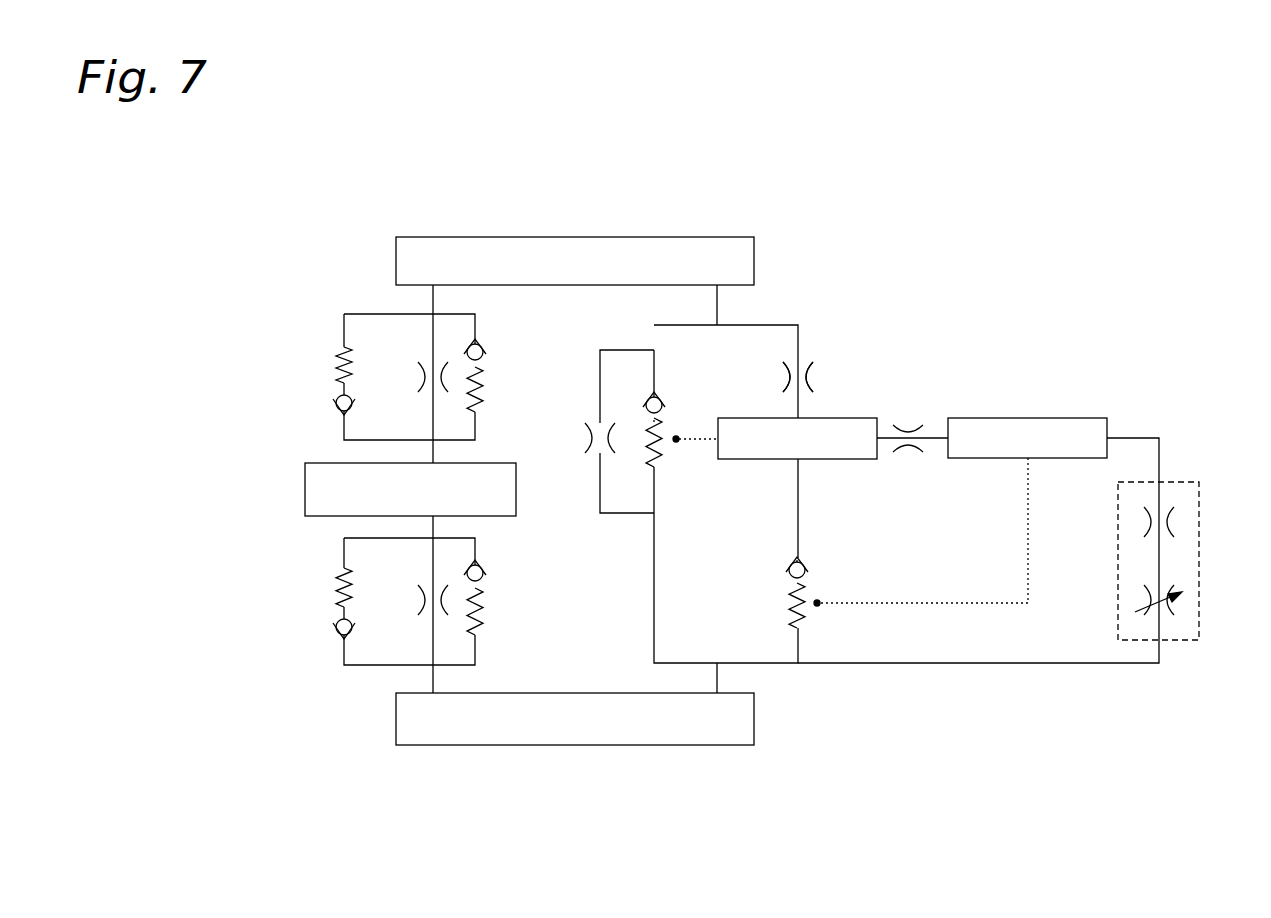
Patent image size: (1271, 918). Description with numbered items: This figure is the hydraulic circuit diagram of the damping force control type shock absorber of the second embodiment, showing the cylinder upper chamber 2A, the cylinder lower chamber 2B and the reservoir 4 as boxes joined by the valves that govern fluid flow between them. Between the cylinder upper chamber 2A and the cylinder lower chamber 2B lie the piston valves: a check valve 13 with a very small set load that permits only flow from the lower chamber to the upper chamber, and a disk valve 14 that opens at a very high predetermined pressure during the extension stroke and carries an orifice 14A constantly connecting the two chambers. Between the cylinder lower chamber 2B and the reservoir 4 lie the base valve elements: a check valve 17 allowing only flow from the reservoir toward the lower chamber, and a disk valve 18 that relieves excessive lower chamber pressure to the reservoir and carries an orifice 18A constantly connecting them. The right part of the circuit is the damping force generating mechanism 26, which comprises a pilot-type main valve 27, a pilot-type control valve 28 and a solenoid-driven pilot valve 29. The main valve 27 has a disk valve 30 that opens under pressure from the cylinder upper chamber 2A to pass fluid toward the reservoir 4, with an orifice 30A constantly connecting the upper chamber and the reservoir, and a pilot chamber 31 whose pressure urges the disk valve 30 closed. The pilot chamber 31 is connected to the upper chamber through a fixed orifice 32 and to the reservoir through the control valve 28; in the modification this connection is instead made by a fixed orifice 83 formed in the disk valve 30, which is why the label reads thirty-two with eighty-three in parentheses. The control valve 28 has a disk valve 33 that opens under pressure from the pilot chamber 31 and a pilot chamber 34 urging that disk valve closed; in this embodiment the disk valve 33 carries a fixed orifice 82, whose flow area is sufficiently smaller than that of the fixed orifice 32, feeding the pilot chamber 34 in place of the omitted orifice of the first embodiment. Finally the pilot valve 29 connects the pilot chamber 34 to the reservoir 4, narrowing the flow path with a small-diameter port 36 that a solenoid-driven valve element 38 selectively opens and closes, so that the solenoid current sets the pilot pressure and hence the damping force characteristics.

The cylinder upper chamber 2A is at (681, 237).
The cylinder lower chamber 2B is at (305, 485).
The reservoir 4 is at (658, 745).
The check valve 13 is at (336, 406).
The disk valve 14 is at (484, 351).
The orifice 14A is at (421, 377).
The check valve 17 is at (336, 629).
The disk valve 18 is at (484, 572).
The orifice 18A is at (421, 600).
The damping force generating mechanism 26 is at (1048, 322).
The main valve 27 is at (673, 473).
The control valve 28 is at (833, 583).
The pilot valve 29 is at (1203, 470).
The disk valve 30 is at (663, 403).
The orifice 30A is at (590, 438).
The pilot chamber 31 is at (855, 418).
The fixed orifice 32 is at (800, 380).
The disk valve 33 is at (804, 568).
The pilot chamber 34 is at (1078, 418).
The port 36 is at (1176, 522).
The valve element 38 is at (1173, 606).
The fixed orifice 82 is at (908, 430).
The fixed orifice 83 is at (798, 377).